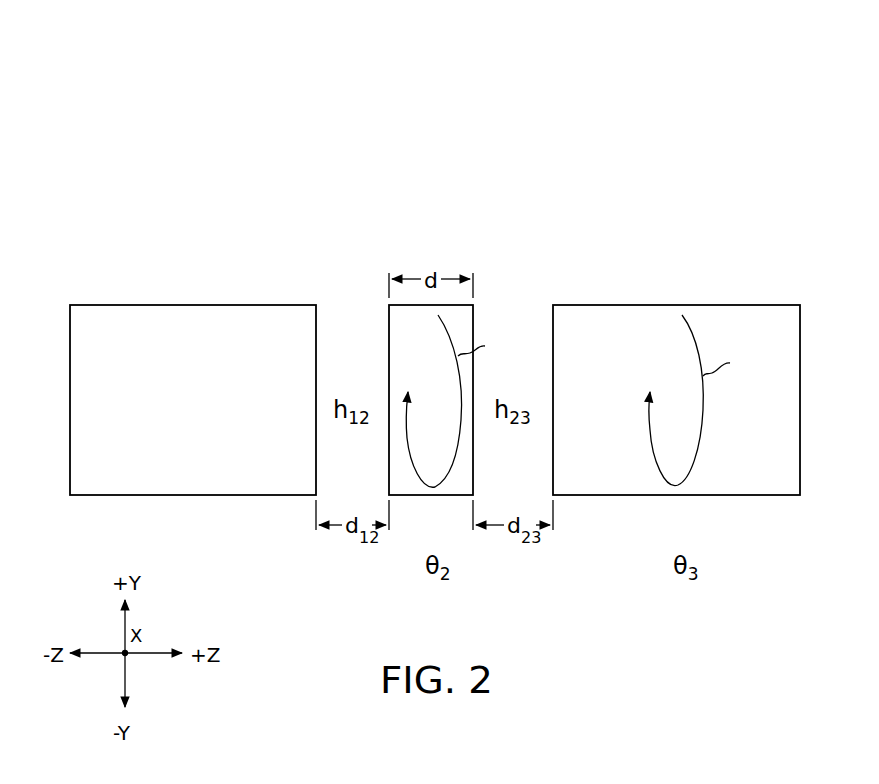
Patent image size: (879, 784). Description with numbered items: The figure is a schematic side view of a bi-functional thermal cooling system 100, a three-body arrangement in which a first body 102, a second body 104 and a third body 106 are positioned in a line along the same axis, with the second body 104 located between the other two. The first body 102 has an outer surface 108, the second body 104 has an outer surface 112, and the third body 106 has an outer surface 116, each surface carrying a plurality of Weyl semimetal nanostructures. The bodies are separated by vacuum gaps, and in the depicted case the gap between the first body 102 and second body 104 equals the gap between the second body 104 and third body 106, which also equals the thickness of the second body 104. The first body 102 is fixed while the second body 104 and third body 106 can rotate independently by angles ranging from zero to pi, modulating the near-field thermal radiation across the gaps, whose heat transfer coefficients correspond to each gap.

The bi-functional thermal cooling system 100 is at (124, 112).
The first body 102 is at (201, 272).
The second body 104 is at (441, 250).
The third body 106 is at (698, 272).
The outer surface 108 is at (217, 414).
The outer surface 112 is at (451, 454).
The outer surface 116 is at (778, 466).